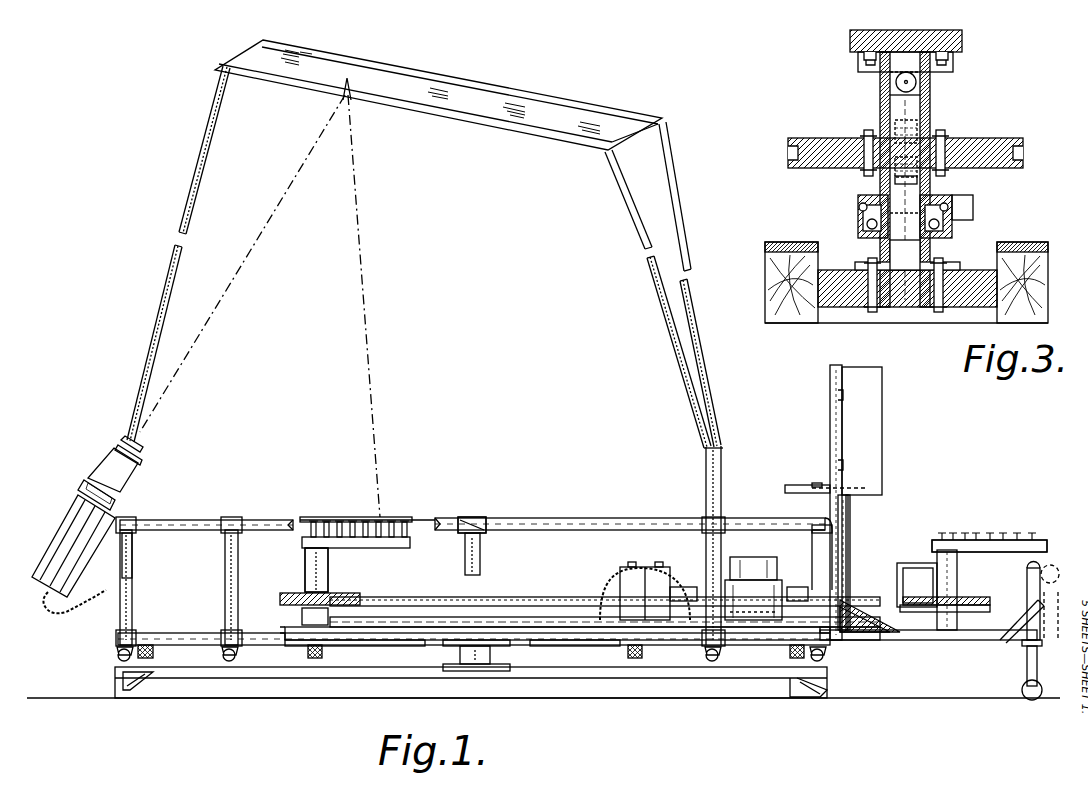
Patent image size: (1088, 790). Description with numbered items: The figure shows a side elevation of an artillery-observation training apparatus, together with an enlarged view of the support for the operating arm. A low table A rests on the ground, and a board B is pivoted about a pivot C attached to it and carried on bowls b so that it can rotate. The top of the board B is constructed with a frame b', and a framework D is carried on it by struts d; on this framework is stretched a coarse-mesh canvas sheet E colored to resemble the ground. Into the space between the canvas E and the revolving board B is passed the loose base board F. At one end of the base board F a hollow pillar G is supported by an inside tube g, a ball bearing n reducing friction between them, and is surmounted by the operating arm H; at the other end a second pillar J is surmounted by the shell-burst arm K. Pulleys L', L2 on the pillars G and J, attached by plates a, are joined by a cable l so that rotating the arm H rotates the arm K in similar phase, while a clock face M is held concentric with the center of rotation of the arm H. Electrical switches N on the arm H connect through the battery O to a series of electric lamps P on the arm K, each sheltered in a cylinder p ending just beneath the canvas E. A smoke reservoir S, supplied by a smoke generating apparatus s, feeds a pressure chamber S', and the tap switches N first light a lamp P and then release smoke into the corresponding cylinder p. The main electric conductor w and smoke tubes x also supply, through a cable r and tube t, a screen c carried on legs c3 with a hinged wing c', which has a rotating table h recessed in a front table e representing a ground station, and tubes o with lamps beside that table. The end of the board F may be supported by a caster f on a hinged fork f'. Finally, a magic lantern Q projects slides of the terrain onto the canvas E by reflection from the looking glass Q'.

In FIG. 1, the looking glass Q' is at (438, 95).
In FIG. 1, the magic lantern Q is at (78, 524).
In FIG. 1, the struts d is at (133, 554).
In FIG. 1, the bowls b is at (471, 686).
In FIG. 1, the table A is at (120, 668).
In FIG. 1, the shell-burst arm K is at (370, 548).
In FIG. 1, the cylinder p is at (326, 522).
In FIG. 1, the electric lamps P is at (312, 521).
In FIG. 1, the canvas sheet E is at (423, 512).
In FIG. 1, the second pillar J is at (297, 566).
In FIG. 1, the pulley L2 is at (290, 594).
In FIG. 1, the framework D is at (539, 515).
In FIG. 1, the cable l is at (545, 589).
In FIG. 1, the main electric conductor w is at (575, 616).
In FIG. 1, the board B is at (443, 650).
In FIG. 1, the pivot C is at (483, 662).
In FIG. 1, the frame b' is at (575, 684).
In FIG. 1, the base board F is at (373, 634).
In FIG. 3, the base board F is at (1040, 287).
In FIG. 1, the battery O is at (651, 570).
In FIG. 1, the smoke generating apparatus s is at (694, 584).
In FIG. 1, the smoke reservoir S is at (753, 553).
In FIG. 1, the pressure chamber S' is at (782, 543).
In FIG. 1, the screen c is at (814, 502).
In FIG. 1, the wing c' is at (880, 431).
In FIG. 1, the rotating table h is at (868, 488).
In FIG. 1, the front table e is at (815, 486).
In FIG. 1, the tubes o is at (818, 480).
In FIG. 1, the tube t is at (857, 518).
In FIG. 1, the cable r is at (862, 543).
In FIG. 1, the legs c3 is at (844, 588).
In FIG. 1, the clock face M is at (921, 558).
In FIG. 1, the electrical switches N is at (985, 538).
In FIG. 1, the operating arm H is at (1035, 543).
In FIG. 3, the operating arm H is at (972, 44).
In FIG. 1, the hollow pillar G is at (965, 586).
In FIG. 3, the hollow pillar G is at (940, 94).
In FIG. 1, the pulley L' is at (945, 638).
In FIG. 3, the pulley L' is at (902, 139).
In FIG. 1, the smoke tubes x is at (836, 635).
In FIG. 1, the hinged fork f' is at (1024, 625).
In FIG. 1, the caster f is at (1019, 689).
In FIG. 3, the inside tube g is at (912, 105).
In FIG. 3, the plates a is at (915, 180).
In FIG. 3, the ball bearing n is at (952, 230).